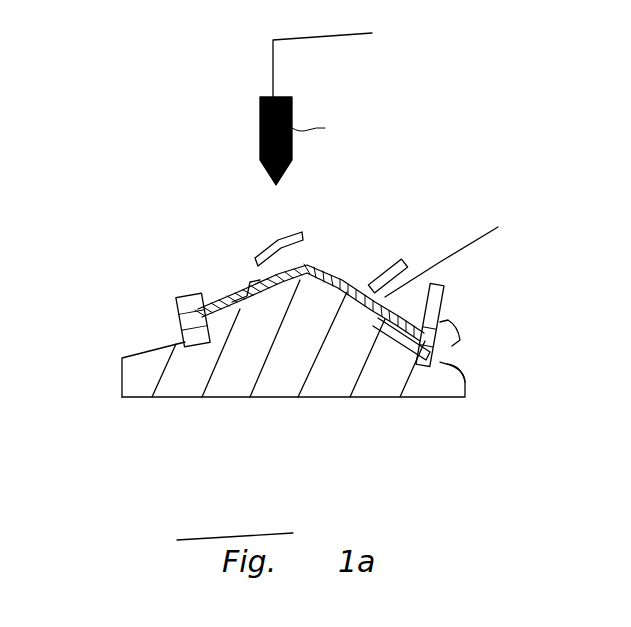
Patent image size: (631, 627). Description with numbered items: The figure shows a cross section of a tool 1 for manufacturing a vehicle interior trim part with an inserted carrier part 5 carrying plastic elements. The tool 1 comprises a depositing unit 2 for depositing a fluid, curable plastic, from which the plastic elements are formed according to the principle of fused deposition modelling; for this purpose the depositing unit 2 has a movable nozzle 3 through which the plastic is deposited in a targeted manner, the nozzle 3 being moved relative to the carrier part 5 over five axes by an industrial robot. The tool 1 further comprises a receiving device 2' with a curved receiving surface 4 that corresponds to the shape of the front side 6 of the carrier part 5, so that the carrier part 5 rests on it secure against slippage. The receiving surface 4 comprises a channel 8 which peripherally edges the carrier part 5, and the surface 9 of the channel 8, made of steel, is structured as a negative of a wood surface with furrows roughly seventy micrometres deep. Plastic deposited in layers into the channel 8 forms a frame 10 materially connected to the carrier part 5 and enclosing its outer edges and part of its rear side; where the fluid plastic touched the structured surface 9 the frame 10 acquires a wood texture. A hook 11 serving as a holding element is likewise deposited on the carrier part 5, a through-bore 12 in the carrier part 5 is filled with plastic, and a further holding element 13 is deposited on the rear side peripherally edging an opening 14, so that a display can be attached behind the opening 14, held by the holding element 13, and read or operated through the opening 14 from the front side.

The tool 1 is at (522, 62).
The depositing unit 2 is at (295, 104).
The receiving device 2' is at (246, 339).
The movable nozzle 3 is at (326, 128).
The receiving surface 4 is at (432, 298).
The carrier part 5 is at (314, 264).
The front side 6 is at (236, 308).
The channel 8 is at (458, 340).
The surface of the channel 9 is at (463, 372).
The frame 10 is at (180, 305).
The hook 11 is at (253, 280).
The through-bore 12 is at (225, 292).
The further holding element 13 is at (392, 268).
The opening 14 is at (456, 248).